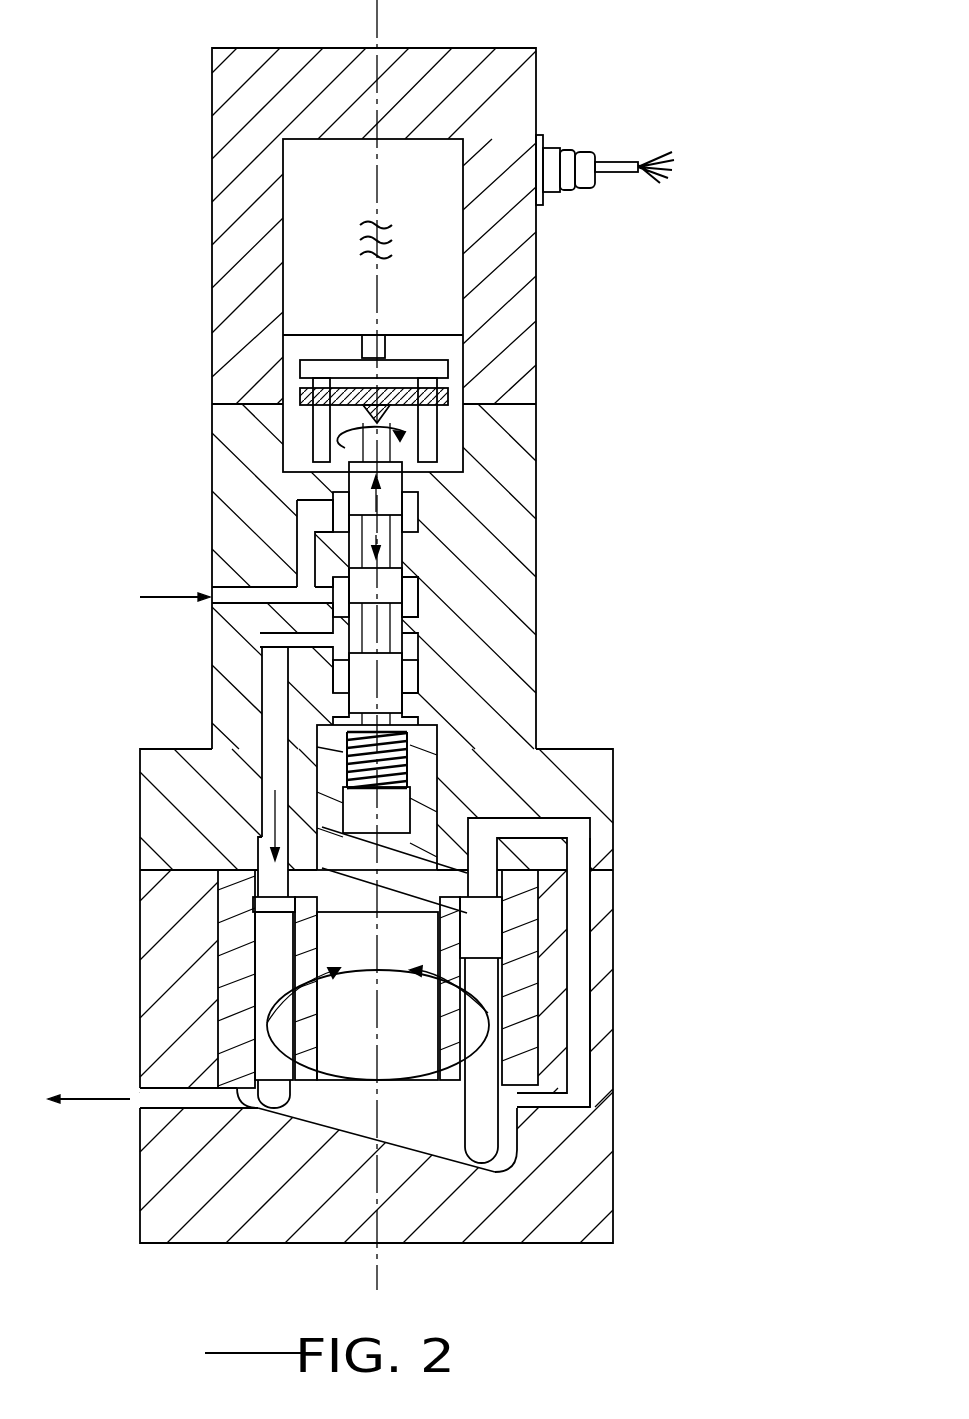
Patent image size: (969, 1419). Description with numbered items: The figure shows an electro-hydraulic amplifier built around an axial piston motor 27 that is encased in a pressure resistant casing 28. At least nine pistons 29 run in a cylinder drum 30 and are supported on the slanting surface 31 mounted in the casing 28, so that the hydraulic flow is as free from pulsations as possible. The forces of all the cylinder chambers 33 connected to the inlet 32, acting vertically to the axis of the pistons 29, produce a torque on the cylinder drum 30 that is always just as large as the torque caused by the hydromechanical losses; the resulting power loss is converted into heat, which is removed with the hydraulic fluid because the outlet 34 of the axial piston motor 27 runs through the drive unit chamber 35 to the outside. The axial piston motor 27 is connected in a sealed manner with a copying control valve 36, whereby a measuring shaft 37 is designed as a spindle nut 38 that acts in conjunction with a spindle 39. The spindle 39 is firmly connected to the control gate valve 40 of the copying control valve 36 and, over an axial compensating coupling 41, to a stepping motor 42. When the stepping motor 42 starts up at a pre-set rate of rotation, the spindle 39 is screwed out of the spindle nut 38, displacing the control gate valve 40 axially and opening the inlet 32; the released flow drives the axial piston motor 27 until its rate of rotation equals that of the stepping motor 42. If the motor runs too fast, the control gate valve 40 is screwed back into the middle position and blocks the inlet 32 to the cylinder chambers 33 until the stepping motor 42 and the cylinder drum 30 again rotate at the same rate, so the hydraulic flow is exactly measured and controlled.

The axial piston motor 27 is at (618, 922).
The pressure resistant casing 28 is at (598, 1002).
The pistons 29 is at (488, 1127).
The cylinder drum 30 is at (228, 1003).
The slanting surface 31 is at (290, 1141).
The inlet 32 is at (262, 850).
The cylinder chambers 33 is at (262, 904).
The outlet 34 is at (480, 852).
The drive unit chamber 35 is at (363, 1112).
The copying control valve 36 is at (545, 458).
The measuring shaft 37 is at (345, 757).
The spindle nut 38 is at (407, 760).
The spindle 39 is at (410, 730).
The control gate valve 40 is at (420, 598).
The axial compensating coupling 41 is at (293, 438).
The stepping motor 42 is at (205, 312).